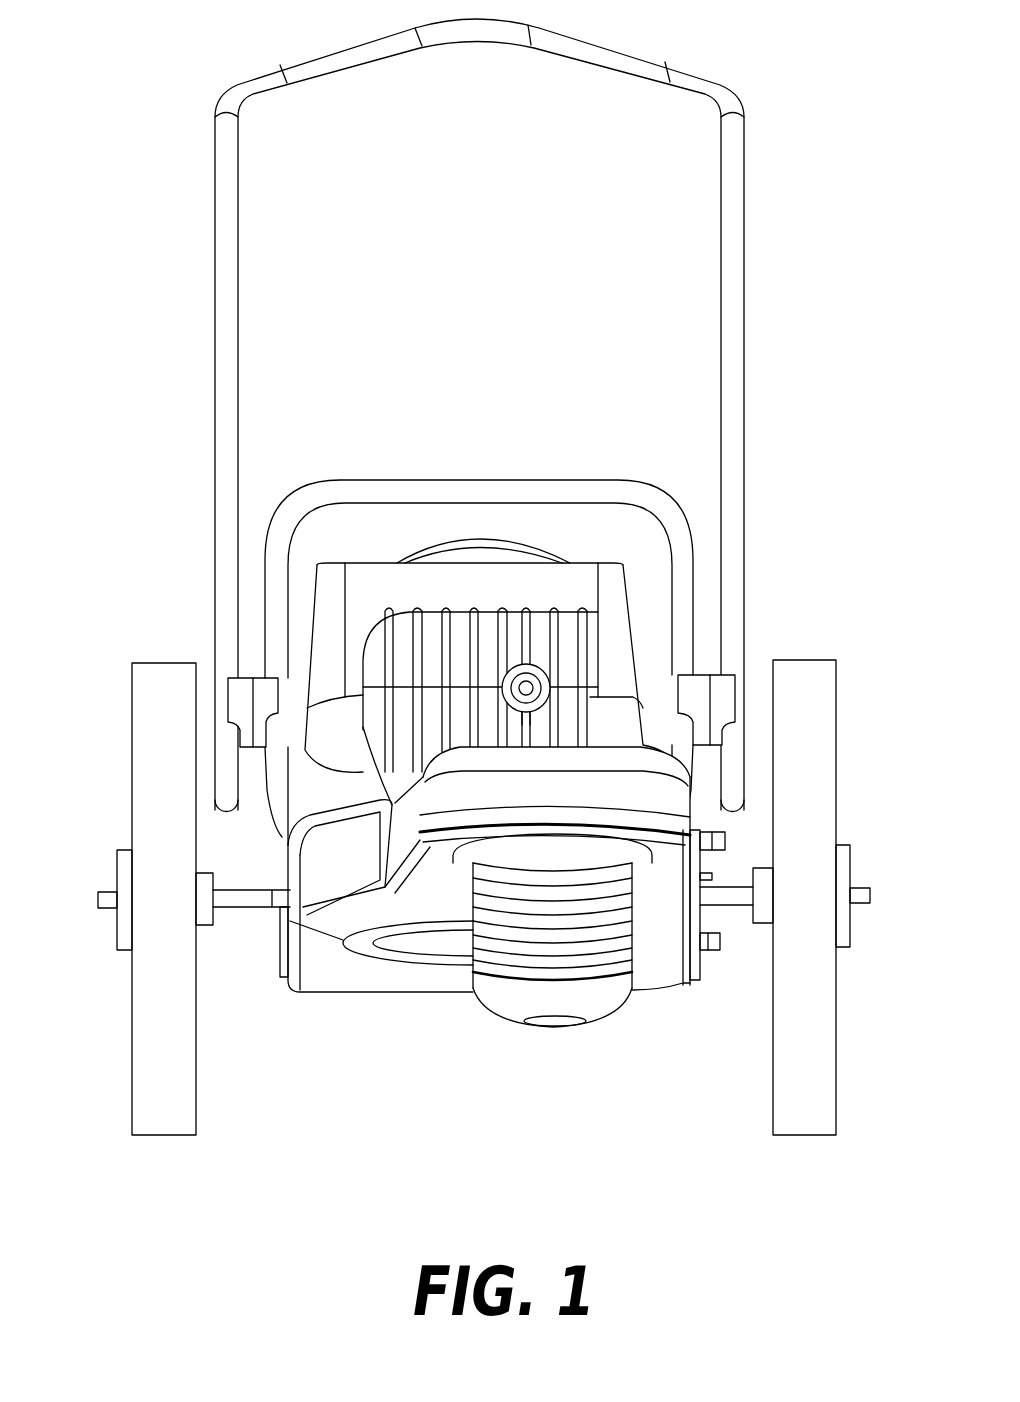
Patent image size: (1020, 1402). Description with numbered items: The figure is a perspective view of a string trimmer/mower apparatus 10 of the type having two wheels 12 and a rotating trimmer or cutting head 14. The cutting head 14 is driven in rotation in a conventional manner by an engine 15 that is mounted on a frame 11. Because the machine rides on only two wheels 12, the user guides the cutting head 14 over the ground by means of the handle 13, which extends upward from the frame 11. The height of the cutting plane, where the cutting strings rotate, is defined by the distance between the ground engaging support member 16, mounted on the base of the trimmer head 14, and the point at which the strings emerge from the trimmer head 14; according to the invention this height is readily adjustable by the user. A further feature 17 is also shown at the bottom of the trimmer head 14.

The string trimmer/mower apparatus 10 is at (479, 567).
The frame 11 is at (315, 973).
The wheels 12 is at (818, 742).
The handle 13 is at (640, 50).
The trimmer head 14 is at (637, 937).
The engine 15 is at (635, 626).
The ground engaging support member 16 is at (483, 1012).
The outlet 17 is at (567, 1026).